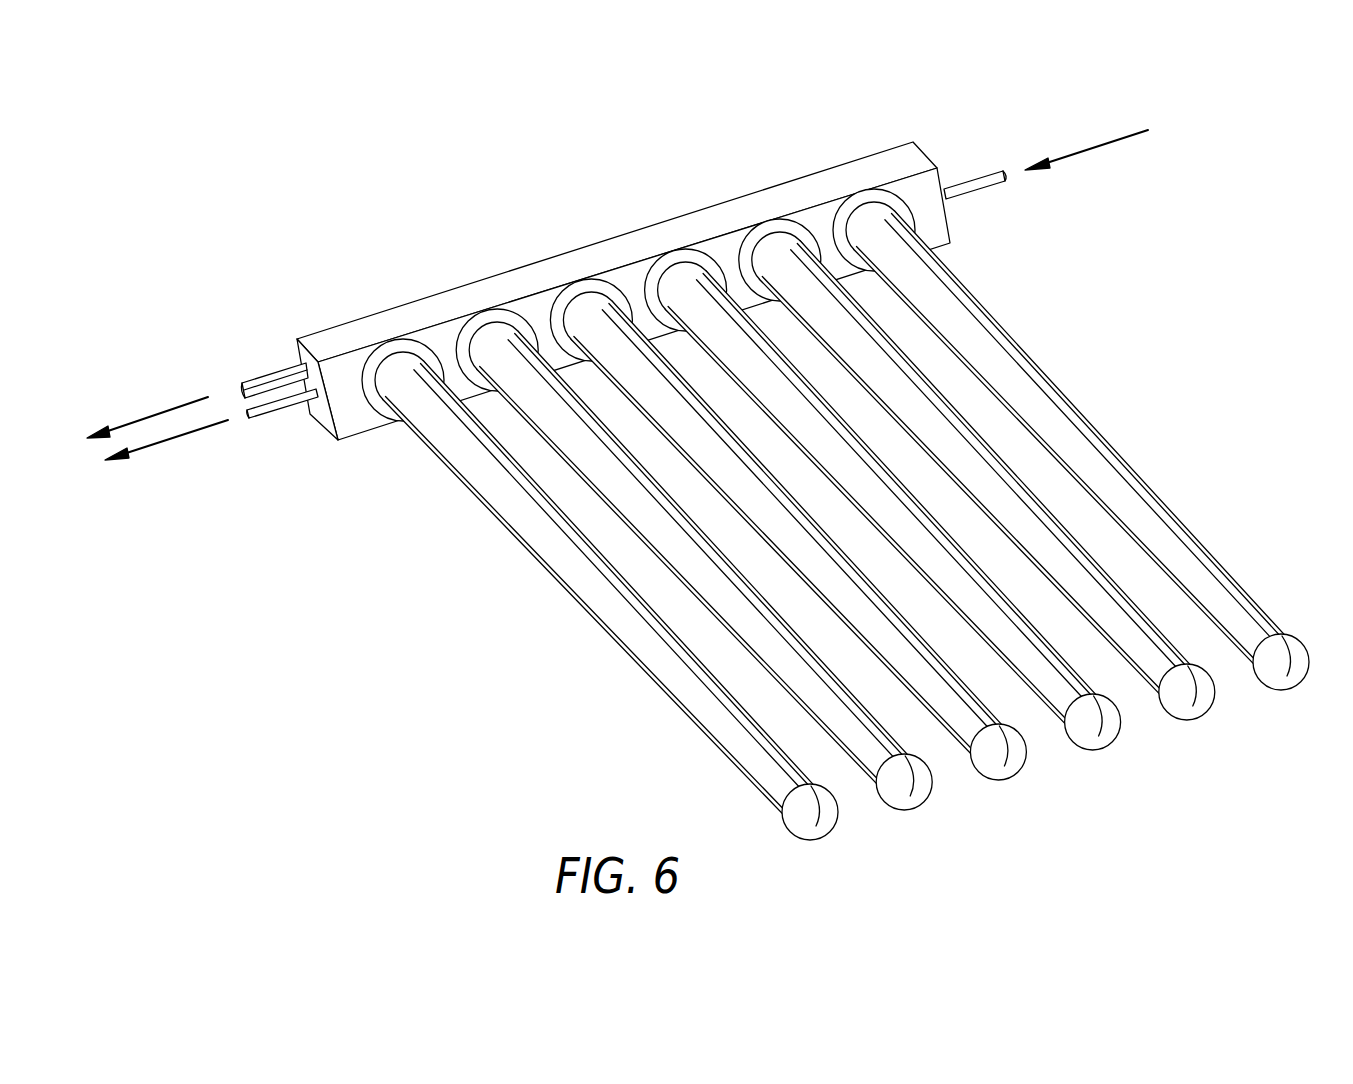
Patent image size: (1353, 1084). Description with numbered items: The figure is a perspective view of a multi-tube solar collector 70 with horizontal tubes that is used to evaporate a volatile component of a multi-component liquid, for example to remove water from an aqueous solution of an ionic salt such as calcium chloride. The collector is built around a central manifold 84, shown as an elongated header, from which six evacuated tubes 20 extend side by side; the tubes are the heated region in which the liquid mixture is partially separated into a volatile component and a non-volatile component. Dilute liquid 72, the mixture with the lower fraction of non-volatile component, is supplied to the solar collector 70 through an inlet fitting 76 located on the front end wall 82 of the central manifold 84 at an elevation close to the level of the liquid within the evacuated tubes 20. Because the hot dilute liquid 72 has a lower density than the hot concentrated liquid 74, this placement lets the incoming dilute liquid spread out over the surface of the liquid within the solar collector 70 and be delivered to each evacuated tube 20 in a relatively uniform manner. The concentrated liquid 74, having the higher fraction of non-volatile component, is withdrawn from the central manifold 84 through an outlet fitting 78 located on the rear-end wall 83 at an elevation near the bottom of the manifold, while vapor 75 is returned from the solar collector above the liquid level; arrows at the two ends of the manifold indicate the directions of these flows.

The evacuated tube 20 is at (1130, 460).
The multi-tube solar collector 70 is at (631, 658).
The dilute liquid 72 is at (1102, 145).
The concentrated liquid 74 is at (160, 443).
The vapor 75 is at (161, 416).
The inlet fitting 76 is at (1012, 181).
The outlet fitting 78 is at (283, 414).
The front end wall 82 is at (952, 245).
The rear-end wall 83 is at (367, 435).
The central manifold 84 is at (770, 187).